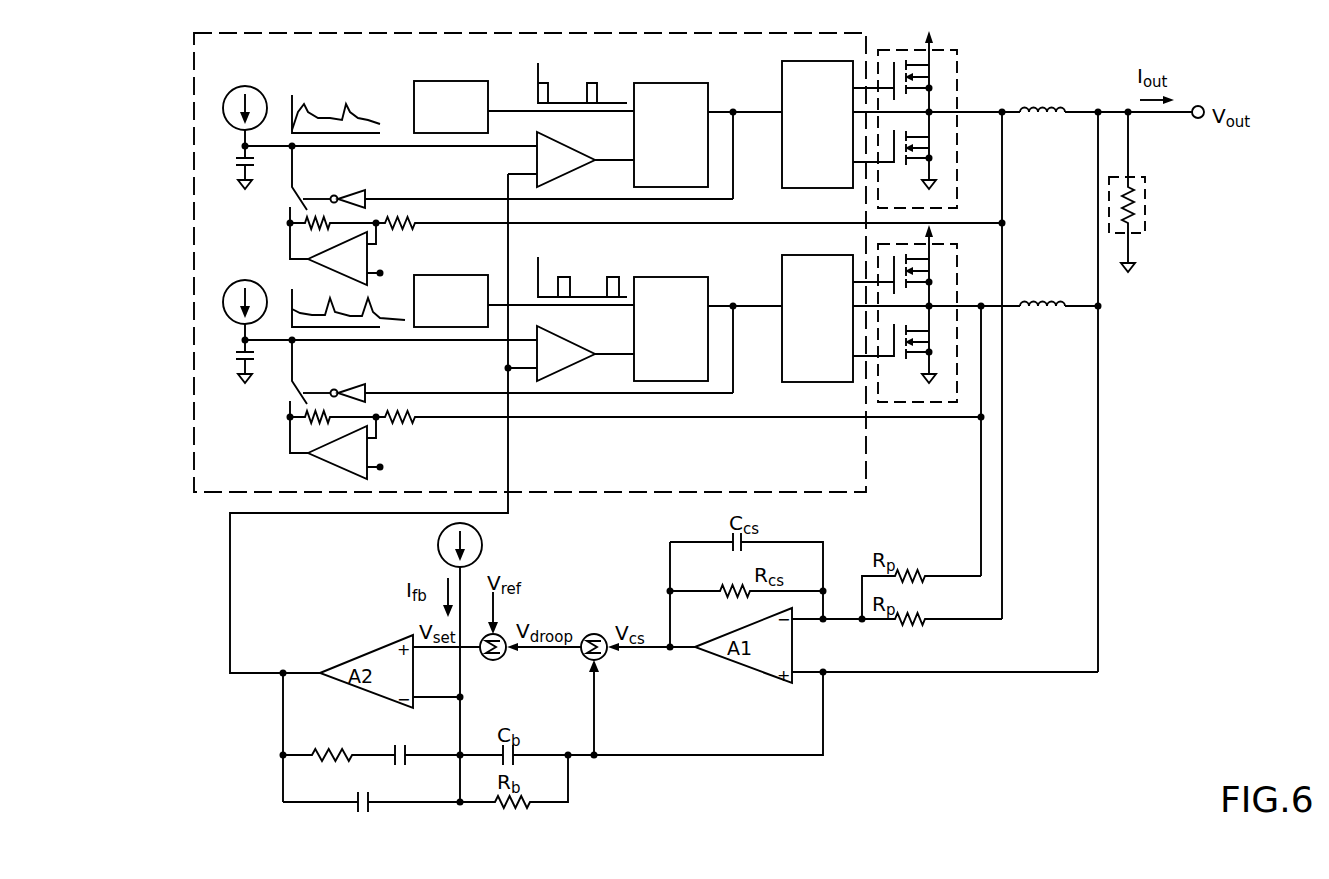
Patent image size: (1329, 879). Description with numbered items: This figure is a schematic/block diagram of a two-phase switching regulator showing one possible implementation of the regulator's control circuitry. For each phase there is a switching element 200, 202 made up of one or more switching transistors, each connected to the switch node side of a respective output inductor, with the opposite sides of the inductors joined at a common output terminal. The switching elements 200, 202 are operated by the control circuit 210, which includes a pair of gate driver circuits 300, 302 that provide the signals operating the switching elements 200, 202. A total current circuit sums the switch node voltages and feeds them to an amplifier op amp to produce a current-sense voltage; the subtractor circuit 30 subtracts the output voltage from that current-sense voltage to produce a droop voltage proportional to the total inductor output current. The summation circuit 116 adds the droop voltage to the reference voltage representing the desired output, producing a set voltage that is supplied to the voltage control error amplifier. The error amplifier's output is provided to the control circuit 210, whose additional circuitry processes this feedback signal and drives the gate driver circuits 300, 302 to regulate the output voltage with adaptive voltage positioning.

The control circuit 210 is at (194, 292).
The gate driver circuit 300 is at (802, 61).
The gate driver circuit 302 is at (802, 255).
The switching element 200 is at (958, 73).
The switching element 202 is at (958, 271).
The subtractor circuit 30 is at (595, 633).
The summation circuit 116 is at (494, 660).